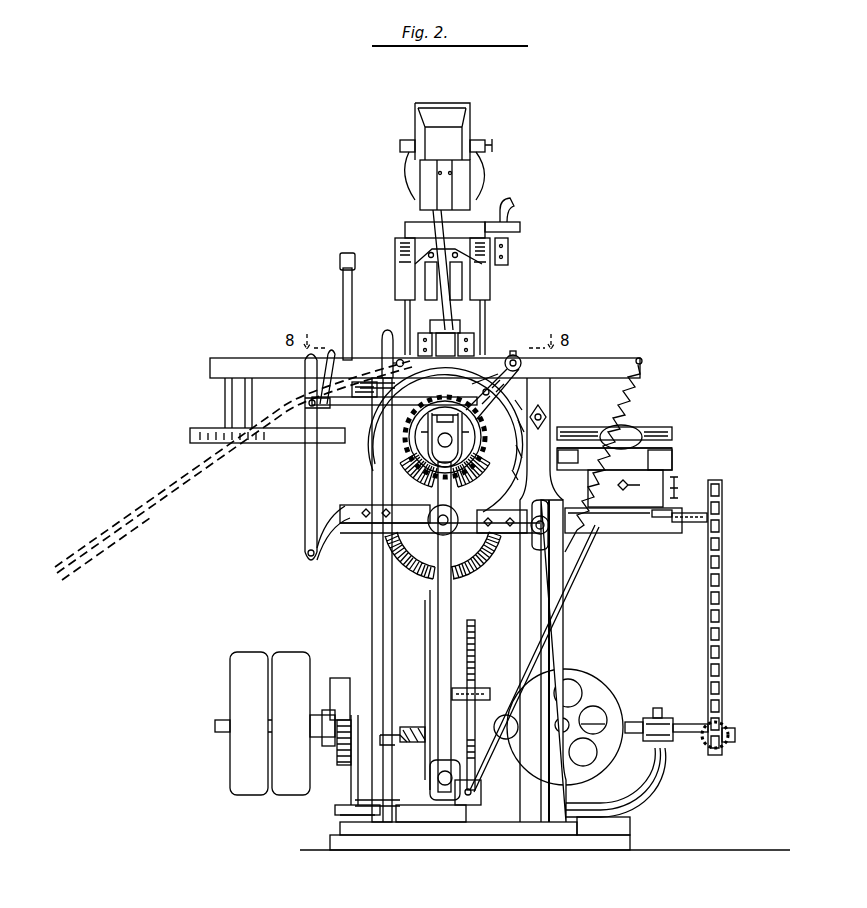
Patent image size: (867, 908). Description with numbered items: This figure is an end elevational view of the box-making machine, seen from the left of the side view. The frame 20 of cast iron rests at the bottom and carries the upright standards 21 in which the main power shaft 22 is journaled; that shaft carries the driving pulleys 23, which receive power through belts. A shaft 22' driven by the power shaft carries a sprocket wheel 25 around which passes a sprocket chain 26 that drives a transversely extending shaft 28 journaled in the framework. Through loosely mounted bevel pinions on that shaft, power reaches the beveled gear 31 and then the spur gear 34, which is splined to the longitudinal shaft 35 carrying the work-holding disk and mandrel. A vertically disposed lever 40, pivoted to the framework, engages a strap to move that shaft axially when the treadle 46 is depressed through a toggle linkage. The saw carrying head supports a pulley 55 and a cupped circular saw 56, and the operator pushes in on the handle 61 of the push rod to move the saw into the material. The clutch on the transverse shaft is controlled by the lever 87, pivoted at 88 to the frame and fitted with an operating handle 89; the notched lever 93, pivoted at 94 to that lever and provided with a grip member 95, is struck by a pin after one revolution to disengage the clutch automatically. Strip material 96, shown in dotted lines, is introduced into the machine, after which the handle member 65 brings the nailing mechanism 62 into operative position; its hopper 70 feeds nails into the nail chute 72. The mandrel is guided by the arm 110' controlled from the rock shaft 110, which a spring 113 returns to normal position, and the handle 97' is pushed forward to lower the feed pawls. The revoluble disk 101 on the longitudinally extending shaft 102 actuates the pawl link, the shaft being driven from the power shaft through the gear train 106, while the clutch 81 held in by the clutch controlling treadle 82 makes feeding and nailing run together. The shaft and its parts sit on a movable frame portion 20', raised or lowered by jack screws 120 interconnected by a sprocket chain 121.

The feed member or hopper 70 is at (452, 112).
The nailing mechanism 62 is at (418, 190).
The nail chute 72 is at (470, 317).
The handle member 65 is at (343, 292).
The handle or grip member 95 is at (338, 346).
The operating handle 89 is at (305, 362).
The rock shaft 110 is at (519, 367).
The arm 110' is at (470, 383).
The handle 97' is at (404, 363).
The spring 113 is at (638, 385).
The pulley 55 is at (625, 428).
The circular saw 56 is at (546, 405).
The handle 61 is at (205, 436).
The pivot 94 is at (308, 408).
The lever 93 is at (372, 405).
The spur gear 34 is at (472, 420).
The longitudinal shaft 35 is at (452, 444).
The lever 87 is at (308, 468).
The strip material 96 is at (200, 472).
The pivot 88 is at (305, 557).
The beveled gear 31 is at (482, 570).
The movable frame part 20' is at (623, 535).
The transversely extending shaft 28 is at (690, 513).
The sprocket chain 26 is at (722, 561).
The lever 40 is at (440, 618).
The driving pulleys 23 is at (248, 656).
The sprocket chain 121 is at (488, 687).
The jack screws 120 is at (475, 700).
The treadle 46 is at (416, 727).
The longitudinally extending shaft 102 is at (567, 720).
The revoluble disk 101 is at (612, 710).
The shaft 22' is at (666, 711).
The sprocket wheel 25 is at (726, 731).
The main power shaft 22 is at (266, 735).
The clutch 81 is at (331, 742).
The gear train 106 is at (343, 765).
The upright standards 21 is at (641, 781).
The clutch controlling treadle 82 is at (363, 825).
The frame 20 is at (545, 843).